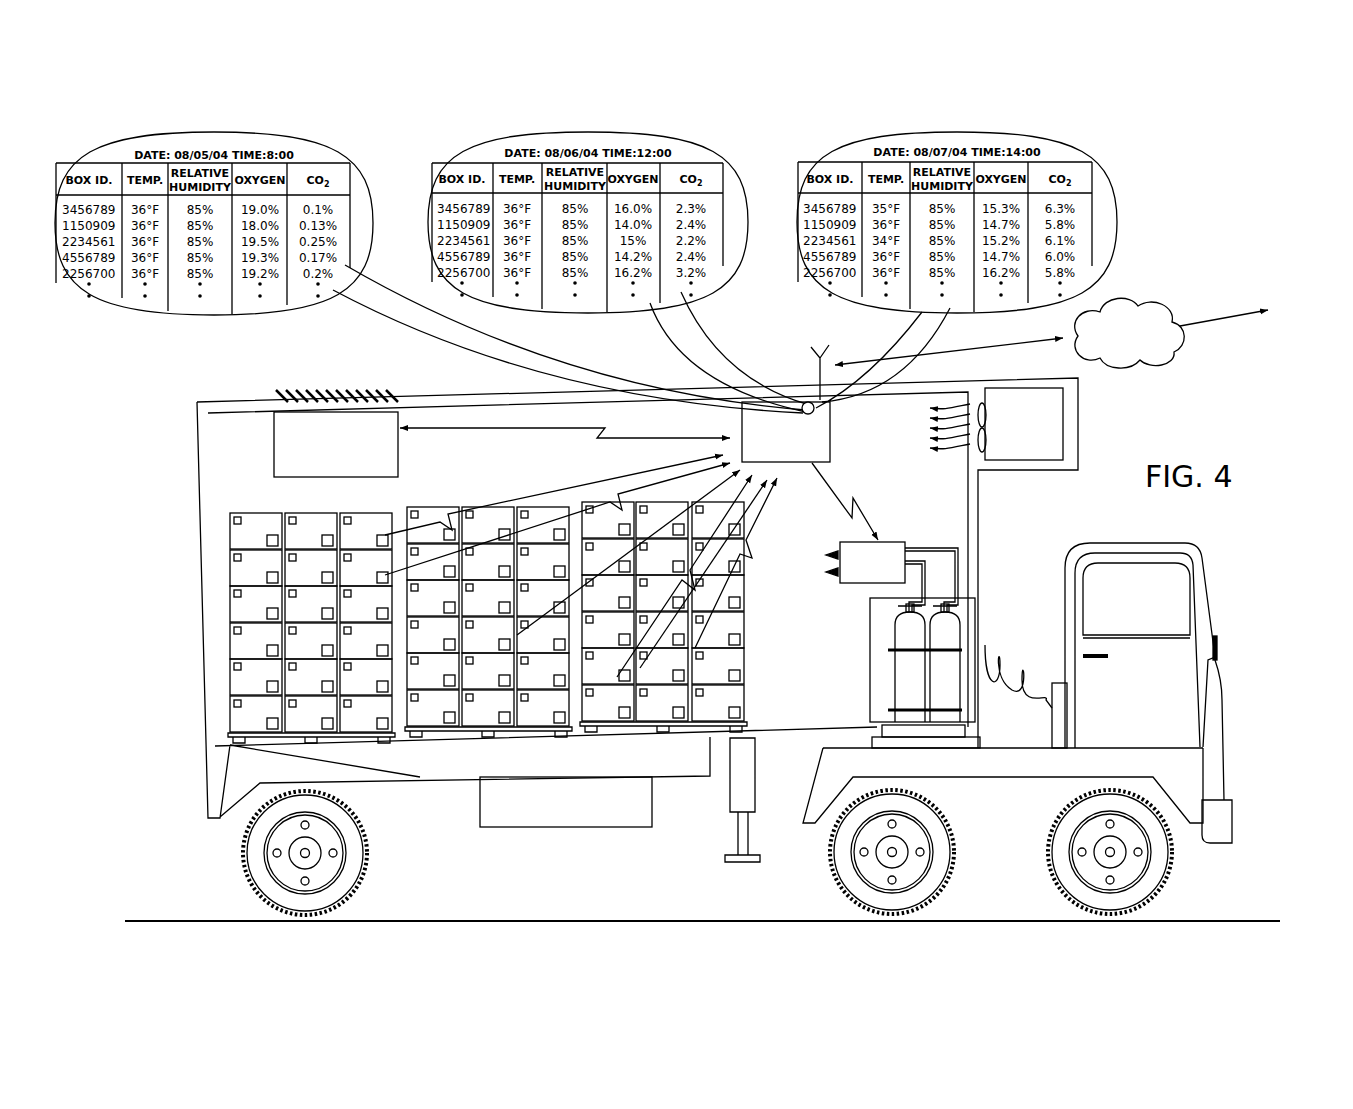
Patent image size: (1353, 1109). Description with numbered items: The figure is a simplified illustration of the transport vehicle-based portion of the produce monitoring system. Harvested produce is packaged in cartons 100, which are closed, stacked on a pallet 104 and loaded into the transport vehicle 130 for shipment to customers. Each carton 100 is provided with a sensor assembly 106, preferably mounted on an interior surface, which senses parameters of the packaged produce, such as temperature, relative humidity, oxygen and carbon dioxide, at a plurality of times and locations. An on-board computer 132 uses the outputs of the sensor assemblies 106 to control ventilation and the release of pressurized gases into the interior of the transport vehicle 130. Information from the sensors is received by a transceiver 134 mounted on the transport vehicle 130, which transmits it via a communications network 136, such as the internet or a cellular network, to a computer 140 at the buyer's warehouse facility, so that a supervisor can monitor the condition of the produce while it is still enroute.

The carton 100 is at (357, 558).
The pallet 104 is at (523, 727).
The sensor assembly 106 is at (278, 580).
The transport vehicle 130 is at (248, 400).
The on-board computer 132 is at (830, 445).
The transceiver 134 is at (820, 372).
The communications network 136 is at (1145, 360).
The computer 140 is at (1248, 286).